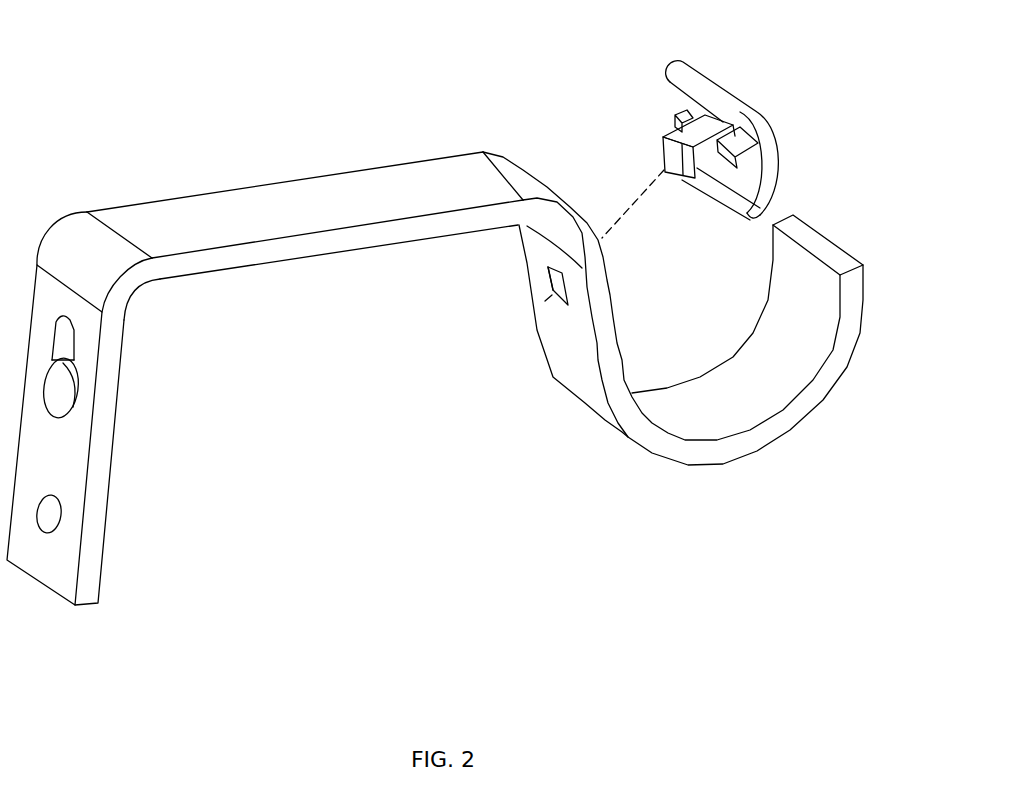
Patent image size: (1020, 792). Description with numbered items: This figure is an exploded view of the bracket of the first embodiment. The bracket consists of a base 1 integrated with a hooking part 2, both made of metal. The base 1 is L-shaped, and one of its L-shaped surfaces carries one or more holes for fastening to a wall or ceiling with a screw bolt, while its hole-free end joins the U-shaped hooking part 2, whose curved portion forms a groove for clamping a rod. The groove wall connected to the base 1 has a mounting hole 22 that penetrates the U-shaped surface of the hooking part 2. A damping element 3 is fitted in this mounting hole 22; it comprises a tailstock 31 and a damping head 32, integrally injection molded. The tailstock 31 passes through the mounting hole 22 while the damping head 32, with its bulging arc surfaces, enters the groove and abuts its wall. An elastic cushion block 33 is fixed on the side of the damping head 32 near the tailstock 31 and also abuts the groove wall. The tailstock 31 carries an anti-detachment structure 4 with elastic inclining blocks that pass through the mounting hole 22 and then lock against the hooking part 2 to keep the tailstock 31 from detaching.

The base 1 is at (265, 378).
The hooking part 2 is at (607, 340).
The mounting hole 22 is at (536, 280).
The damping element 3 is at (667, 120).
The tailstock 31 is at (638, 106).
The damping head 32 is at (680, 65).
The elastic cushion block 33 is at (688, 112).
The anti-detachment structure 4 is at (652, 131).